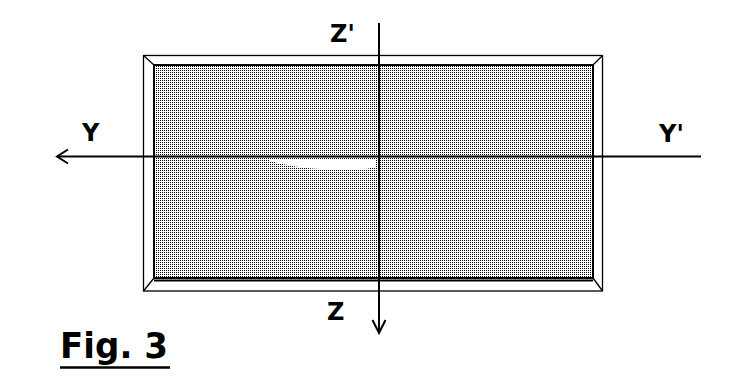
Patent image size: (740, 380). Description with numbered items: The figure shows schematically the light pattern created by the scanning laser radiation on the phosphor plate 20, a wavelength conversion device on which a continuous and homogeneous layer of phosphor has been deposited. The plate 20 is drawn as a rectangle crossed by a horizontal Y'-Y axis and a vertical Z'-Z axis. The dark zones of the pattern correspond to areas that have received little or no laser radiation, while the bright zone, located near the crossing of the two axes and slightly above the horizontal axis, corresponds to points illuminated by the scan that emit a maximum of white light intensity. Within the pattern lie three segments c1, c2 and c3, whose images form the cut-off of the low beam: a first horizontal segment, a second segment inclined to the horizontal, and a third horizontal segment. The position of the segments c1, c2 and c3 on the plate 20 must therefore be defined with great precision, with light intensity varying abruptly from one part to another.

The phosphor plate 20 is at (558, 281).
The first segment c1 is at (458, 152).
The second segment c2 is at (360, 162).
The third segment c3 is at (248, 164).